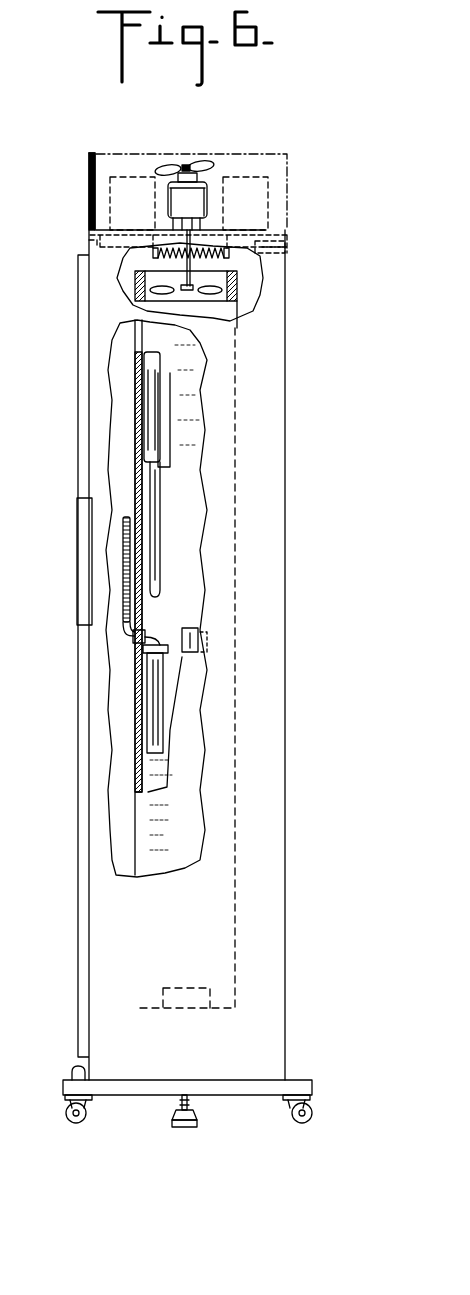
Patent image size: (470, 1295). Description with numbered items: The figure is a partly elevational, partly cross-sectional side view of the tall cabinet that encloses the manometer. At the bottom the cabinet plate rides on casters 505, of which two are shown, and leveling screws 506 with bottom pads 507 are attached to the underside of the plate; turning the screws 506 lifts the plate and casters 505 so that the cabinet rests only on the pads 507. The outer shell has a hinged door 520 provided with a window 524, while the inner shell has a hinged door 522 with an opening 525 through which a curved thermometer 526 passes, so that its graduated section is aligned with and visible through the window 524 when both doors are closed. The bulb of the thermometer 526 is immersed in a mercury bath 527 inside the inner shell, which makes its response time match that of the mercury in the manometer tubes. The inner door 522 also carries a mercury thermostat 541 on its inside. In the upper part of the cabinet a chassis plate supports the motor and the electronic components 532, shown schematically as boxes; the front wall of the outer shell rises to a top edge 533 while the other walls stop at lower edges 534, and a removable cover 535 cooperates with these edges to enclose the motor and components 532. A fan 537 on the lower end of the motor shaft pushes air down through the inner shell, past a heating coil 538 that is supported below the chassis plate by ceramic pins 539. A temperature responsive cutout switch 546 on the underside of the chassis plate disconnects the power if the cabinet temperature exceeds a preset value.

The casters 505 is at (85, 1122).
The leveling screws 506 is at (182, 1100).
The bottom pads 507 is at (178, 1127).
The door 520 is at (82, 813).
The door 522 is at (137, 760).
The window 524 is at (77, 522).
The opening 525 is at (140, 645).
The curved thermometer 526 is at (122, 556).
The mercury bath 527 is at (155, 700).
The electronic components 532 is at (120, 192).
The top edge 533 is at (92, 153).
The edges 534 is at (265, 232).
The cover 535 is at (262, 146).
The fan 537 is at (223, 291).
The heating coil 538 is at (187, 268).
The ceramic pins 539 is at (155, 256).
The mercury thermostat 541 is at (150, 413).
The temperature responsive cutout switch 546 is at (280, 250).